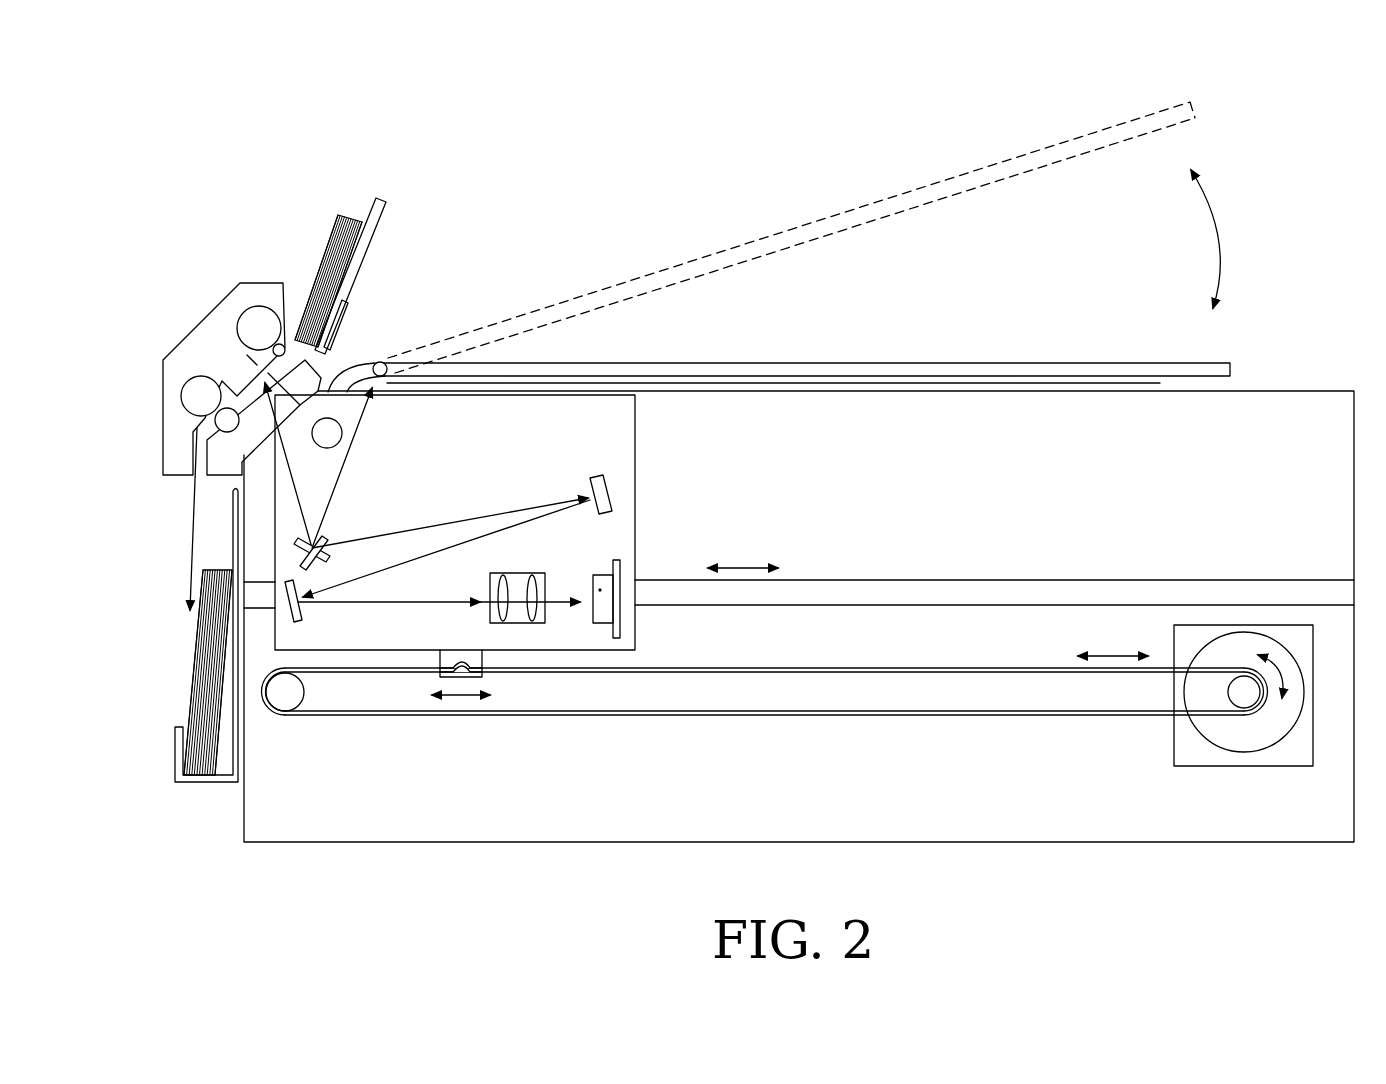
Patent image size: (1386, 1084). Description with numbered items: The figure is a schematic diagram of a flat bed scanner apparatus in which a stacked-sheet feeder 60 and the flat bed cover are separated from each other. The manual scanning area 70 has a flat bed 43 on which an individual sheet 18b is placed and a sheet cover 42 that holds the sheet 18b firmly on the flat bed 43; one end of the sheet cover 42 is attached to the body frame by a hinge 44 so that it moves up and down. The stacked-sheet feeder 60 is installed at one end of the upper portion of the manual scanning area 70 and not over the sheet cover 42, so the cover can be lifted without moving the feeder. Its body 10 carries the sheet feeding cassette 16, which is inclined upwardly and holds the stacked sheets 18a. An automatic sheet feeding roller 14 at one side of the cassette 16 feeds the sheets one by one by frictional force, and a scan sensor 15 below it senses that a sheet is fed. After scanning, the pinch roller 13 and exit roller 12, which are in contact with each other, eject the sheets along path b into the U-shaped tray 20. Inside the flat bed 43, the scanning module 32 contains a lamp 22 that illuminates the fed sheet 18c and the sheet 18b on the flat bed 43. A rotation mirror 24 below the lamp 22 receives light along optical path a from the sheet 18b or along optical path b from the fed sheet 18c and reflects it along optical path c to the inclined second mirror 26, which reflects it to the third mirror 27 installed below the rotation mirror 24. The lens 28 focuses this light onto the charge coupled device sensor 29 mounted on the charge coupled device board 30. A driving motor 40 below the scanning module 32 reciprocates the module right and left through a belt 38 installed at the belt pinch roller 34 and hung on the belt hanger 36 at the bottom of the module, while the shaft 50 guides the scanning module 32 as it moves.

The sheet feeding unit body 10 is at (208, 325).
The exit roller 12 is at (200, 396).
The pinch roller 13 is at (225, 420).
The automatic sheet feeding roller 14 is at (258, 318).
The scan sensor 15 is at (283, 342).
The sheet feeding cassette 16 is at (372, 228).
The stacked sheets 18a is at (343, 240).
The individual sheet 18b is at (1160, 385).
The fed sheet 18c is at (240, 388).
The tray 20 is at (178, 735).
The lamp 22 is at (333, 440).
The rotation mirror 24 is at (333, 545).
The second mirror 26 is at (596, 478).
The third mirror 27 is at (300, 613).
The lens 28 is at (517, 580).
The charge coupled device sensor 29 is at (603, 577).
The charge coupled device board 30 is at (620, 567).
The scanning module 32 is at (640, 420).
The belt pinch roller 34 is at (290, 702).
The belt hanger 36 is at (482, 660).
The belt 38 is at (600, 718).
The driving motor 40 is at (1248, 745).
The sheet cover 42 is at (1030, 363).
The flat bed 43 is at (1298, 391).
The hinge 44 is at (383, 361).
The shaft 50 is at (1068, 580).
The stacked-sheet feeder 60 is at (148, 306).
The manual scanning area 70 is at (1270, 294).
The optical path a is at (355, 422).
The optical path b is at (237, 478).
The optical path c is at (478, 517).